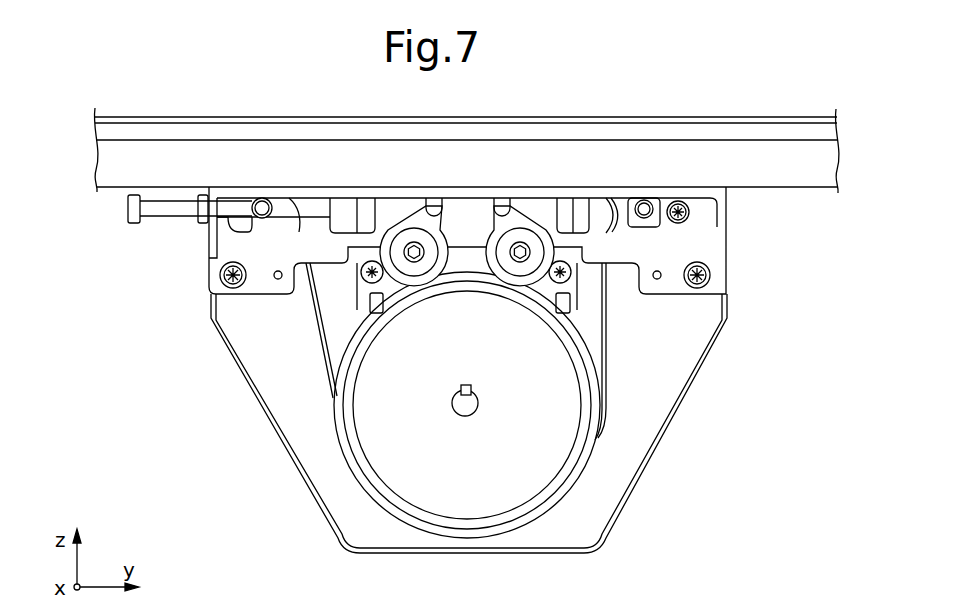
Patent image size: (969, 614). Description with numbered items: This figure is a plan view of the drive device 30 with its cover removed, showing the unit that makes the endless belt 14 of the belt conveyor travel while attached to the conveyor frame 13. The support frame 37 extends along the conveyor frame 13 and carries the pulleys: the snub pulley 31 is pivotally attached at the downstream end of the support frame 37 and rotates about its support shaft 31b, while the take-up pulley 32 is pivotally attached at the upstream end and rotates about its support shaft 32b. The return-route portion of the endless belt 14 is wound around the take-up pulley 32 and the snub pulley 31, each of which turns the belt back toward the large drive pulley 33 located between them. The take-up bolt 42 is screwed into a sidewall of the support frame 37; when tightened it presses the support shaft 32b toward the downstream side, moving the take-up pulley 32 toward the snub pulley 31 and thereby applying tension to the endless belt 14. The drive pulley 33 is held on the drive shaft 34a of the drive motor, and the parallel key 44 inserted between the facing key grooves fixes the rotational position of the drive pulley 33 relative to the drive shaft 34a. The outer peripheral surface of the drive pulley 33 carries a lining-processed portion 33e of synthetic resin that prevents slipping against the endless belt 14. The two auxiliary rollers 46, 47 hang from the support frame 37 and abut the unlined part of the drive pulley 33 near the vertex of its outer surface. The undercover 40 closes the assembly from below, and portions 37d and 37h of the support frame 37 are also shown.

The conveyor frame 13 is at (811, 177).
The endless belt 14 is at (722, 120).
The drive device 30 is at (464, 349).
The snub pulley 31 is at (640, 189).
The support shaft 31b is at (644, 201).
The take-up pulley 32 is at (273, 191).
The support shaft 32b is at (282, 200).
The drive pulley 33 is at (487, 400).
The lining-processed portion 33e is at (591, 384).
The drive shaft 34a is at (470, 412).
The support frame 37 is at (504, 220).
The slot of mounting plate 37d is at (591, 207).
The slot of mounting plate 37h is at (335, 202).
The undercover 40 is at (272, 436).
The take-up bolt 42 is at (152, 213).
The parallel key 44 is at (472, 388).
The auxiliary roller 46 is at (437, 222).
The auxiliary roller 47 is at (497, 222).